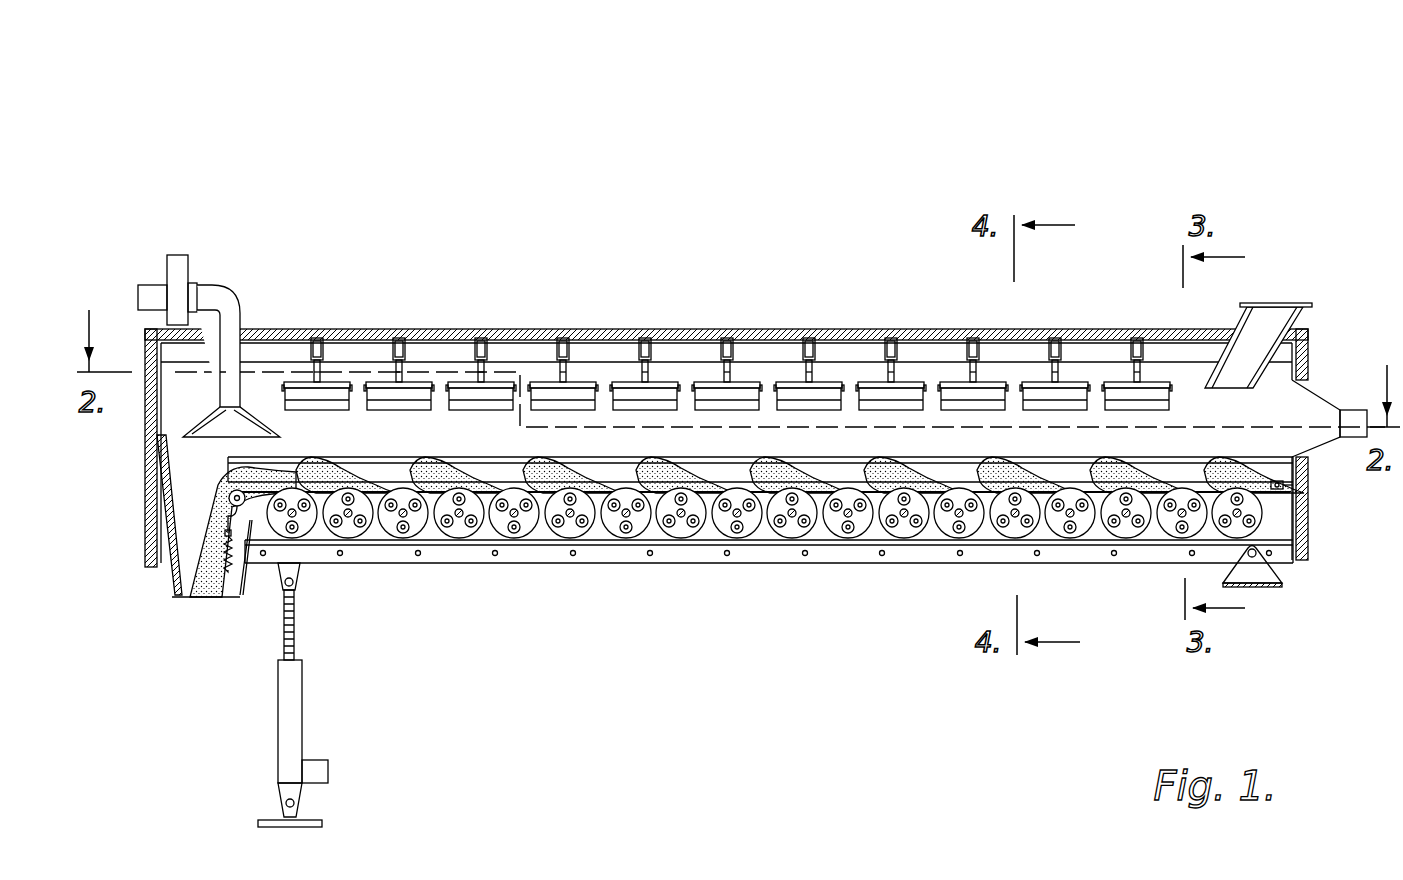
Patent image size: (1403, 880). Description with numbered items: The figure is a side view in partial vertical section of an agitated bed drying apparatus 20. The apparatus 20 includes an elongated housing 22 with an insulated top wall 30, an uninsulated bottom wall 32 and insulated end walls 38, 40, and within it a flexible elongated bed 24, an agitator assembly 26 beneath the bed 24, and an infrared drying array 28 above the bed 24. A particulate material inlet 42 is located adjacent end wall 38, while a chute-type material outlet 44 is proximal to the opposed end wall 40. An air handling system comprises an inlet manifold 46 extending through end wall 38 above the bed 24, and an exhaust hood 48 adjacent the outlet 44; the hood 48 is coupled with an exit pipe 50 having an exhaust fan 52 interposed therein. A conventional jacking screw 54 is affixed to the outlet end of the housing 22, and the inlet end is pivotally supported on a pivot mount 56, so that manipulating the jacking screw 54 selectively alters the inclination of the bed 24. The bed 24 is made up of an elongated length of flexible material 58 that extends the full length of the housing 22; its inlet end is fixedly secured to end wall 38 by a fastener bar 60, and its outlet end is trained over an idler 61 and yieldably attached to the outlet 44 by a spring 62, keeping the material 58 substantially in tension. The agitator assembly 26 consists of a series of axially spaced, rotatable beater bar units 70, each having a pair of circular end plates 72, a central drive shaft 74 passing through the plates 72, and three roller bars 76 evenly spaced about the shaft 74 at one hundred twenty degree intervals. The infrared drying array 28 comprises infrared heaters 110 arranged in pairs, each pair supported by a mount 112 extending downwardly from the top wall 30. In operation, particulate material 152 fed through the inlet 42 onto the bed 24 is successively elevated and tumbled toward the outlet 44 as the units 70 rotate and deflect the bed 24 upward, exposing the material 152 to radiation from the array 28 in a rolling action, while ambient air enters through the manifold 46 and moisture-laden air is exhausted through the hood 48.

The agitated bed drying apparatus 20 is at (1172, 180).
The elongated housing 22 is at (731, 399).
The flexible elongated bed 24 is at (740, 496).
The agitator assembly 26 is at (740, 520).
The infrared drying array 28 is at (691, 343).
The top wall 30 is at (527, 328).
The bottom wall 32 is at (785, 563).
The end wall 38 is at (1310, 354).
The end wall 40 is at (152, 435).
The particulate material inlet 42 is at (1300, 315).
The chute-type material outlet 44 is at (173, 582).
The inlet manifold 46 is at (1327, 405).
The exhaust hood 48 is at (280, 434).
The exit pipe 50 is at (240, 296).
The exhaust fan 52 is at (177, 252).
The jacking screw 54 is at (292, 715).
The pivot mount 56 is at (1265, 575).
The flexible material 58 is at (713, 497).
The fastener bar 60 is at (1283, 507).
The idler 61 is at (232, 516).
The spring 62 is at (230, 560).
The beater bar unit 70 is at (454, 548).
The circular end plate 72 is at (528, 527).
The central drive shaft 74 is at (681, 515).
The roller bar 76 is at (905, 492).
The infrared heater 110 is at (1065, 392).
The mount 112 is at (1052, 347).
The particulate material 152 is at (1215, 470).